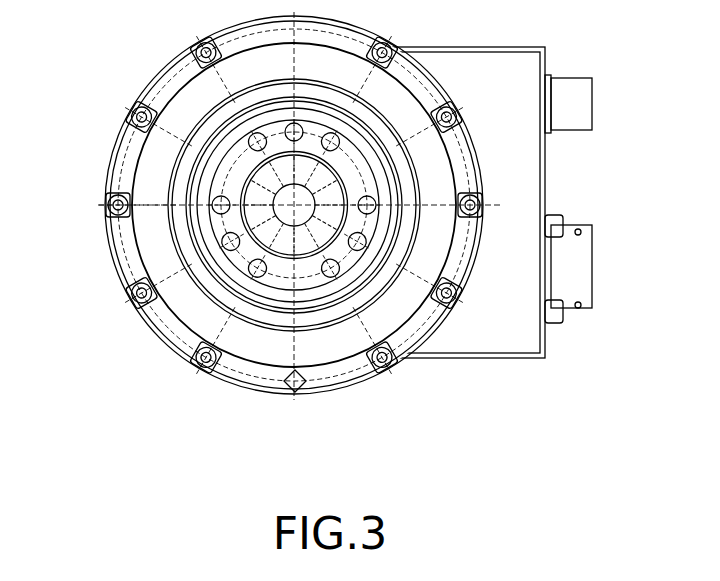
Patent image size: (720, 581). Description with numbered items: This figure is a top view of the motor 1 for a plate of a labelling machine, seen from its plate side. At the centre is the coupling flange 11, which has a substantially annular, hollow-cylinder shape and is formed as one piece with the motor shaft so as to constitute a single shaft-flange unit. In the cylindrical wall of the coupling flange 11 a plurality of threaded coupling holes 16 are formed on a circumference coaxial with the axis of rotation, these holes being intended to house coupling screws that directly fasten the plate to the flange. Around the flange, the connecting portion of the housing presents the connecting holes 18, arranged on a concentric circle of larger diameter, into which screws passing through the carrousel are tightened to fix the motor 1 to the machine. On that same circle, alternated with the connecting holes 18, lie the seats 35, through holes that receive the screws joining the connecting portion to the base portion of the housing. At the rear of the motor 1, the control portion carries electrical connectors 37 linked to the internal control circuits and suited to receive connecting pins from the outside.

The motor 1 is at (372, 418).
The coupling flange 11 is at (200, 137).
The threaded coupling holes 16 is at (177, 238).
The connecting holes 18 is at (296, 395).
The seats 35 is at (388, 366).
The electrical connectors 37 is at (573, 102).